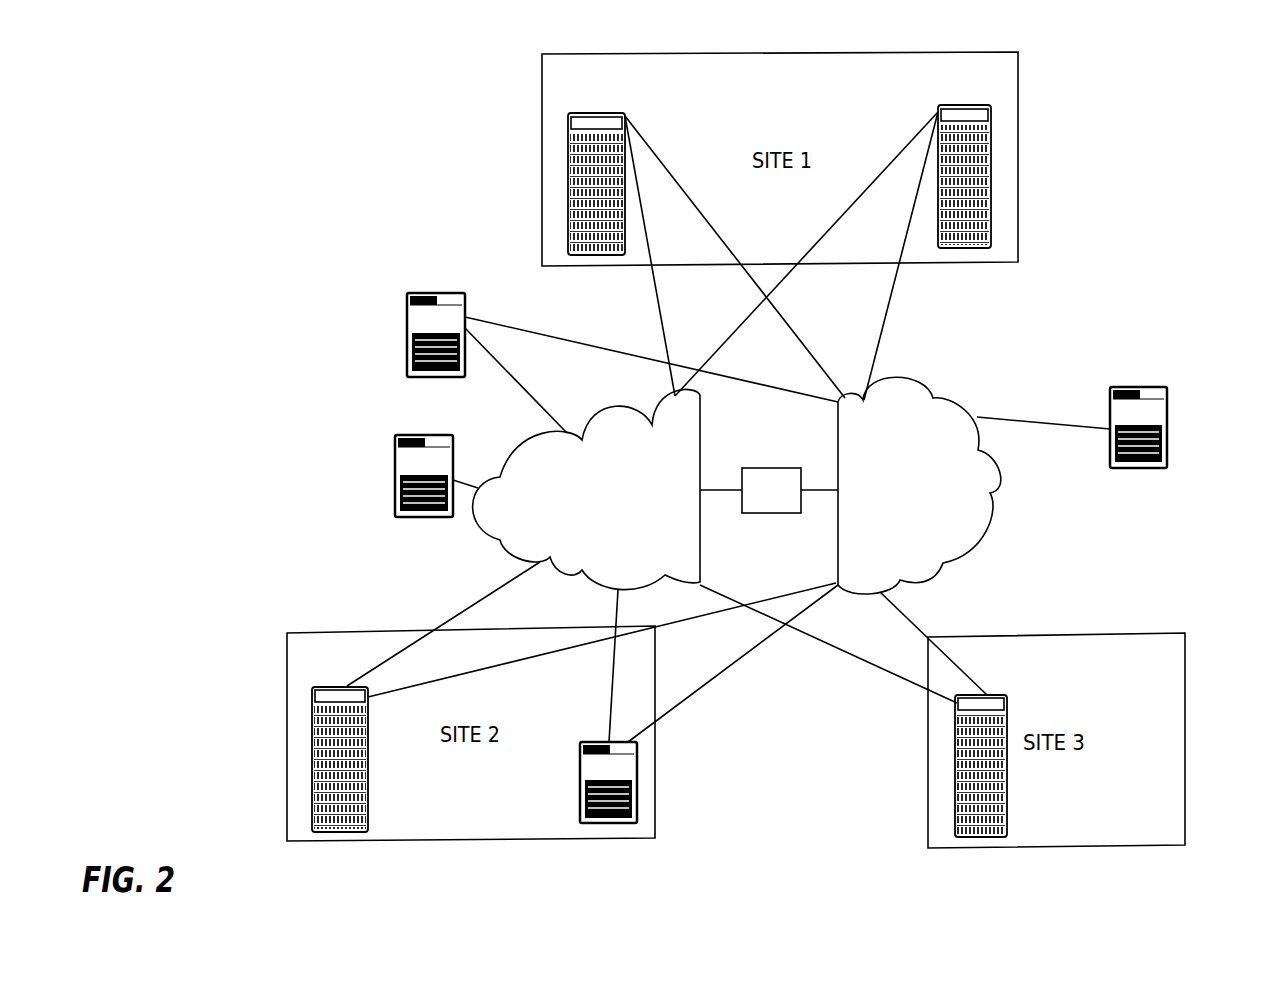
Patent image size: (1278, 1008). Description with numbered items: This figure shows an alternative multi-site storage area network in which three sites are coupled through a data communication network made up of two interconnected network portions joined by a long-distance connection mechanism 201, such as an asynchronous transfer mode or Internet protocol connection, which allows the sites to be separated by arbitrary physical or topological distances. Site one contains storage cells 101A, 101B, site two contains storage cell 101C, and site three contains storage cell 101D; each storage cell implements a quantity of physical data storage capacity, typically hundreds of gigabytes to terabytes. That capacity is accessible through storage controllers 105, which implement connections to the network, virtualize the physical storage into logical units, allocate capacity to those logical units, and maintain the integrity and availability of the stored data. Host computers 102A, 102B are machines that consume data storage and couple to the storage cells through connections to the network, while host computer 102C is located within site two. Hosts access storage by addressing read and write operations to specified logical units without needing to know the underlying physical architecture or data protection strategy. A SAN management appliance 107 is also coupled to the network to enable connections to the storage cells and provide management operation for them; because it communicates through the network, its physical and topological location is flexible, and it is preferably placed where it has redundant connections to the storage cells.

The storage cell 101A is at (567, 165).
The storage cell 101B is at (993, 168).
The storage cell 101C is at (310, 747).
The storage cell 101D is at (950, 780).
The host computer 102A is at (397, 327).
The host computer 102B is at (1167, 430).
The host computer 102C is at (645, 788).
The storage controller 105 is at (567, 128).
The SAN management appliance 107 is at (392, 522).
The long-distance connection mechanism 201 is at (778, 513).